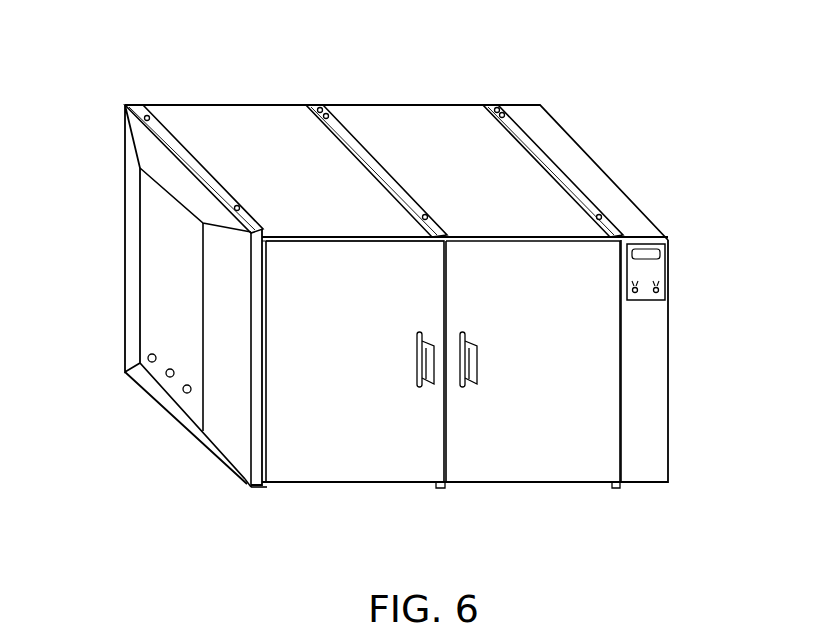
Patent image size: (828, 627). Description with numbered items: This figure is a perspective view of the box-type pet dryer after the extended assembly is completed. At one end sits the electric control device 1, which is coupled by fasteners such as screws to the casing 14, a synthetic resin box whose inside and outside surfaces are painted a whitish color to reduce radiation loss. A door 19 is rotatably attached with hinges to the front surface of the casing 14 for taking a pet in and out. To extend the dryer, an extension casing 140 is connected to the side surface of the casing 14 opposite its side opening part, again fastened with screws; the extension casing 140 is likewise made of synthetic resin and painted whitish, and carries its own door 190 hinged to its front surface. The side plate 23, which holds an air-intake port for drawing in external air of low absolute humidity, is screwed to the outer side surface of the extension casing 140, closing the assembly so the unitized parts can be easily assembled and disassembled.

The electric control device 1 is at (374, 298).
The casing 14 is at (396, 128).
The extension casing 140 is at (227, 106).
The door 19 is at (520, 458).
The door 190 is at (342, 455).
The side plate 23 is at (177, 403).